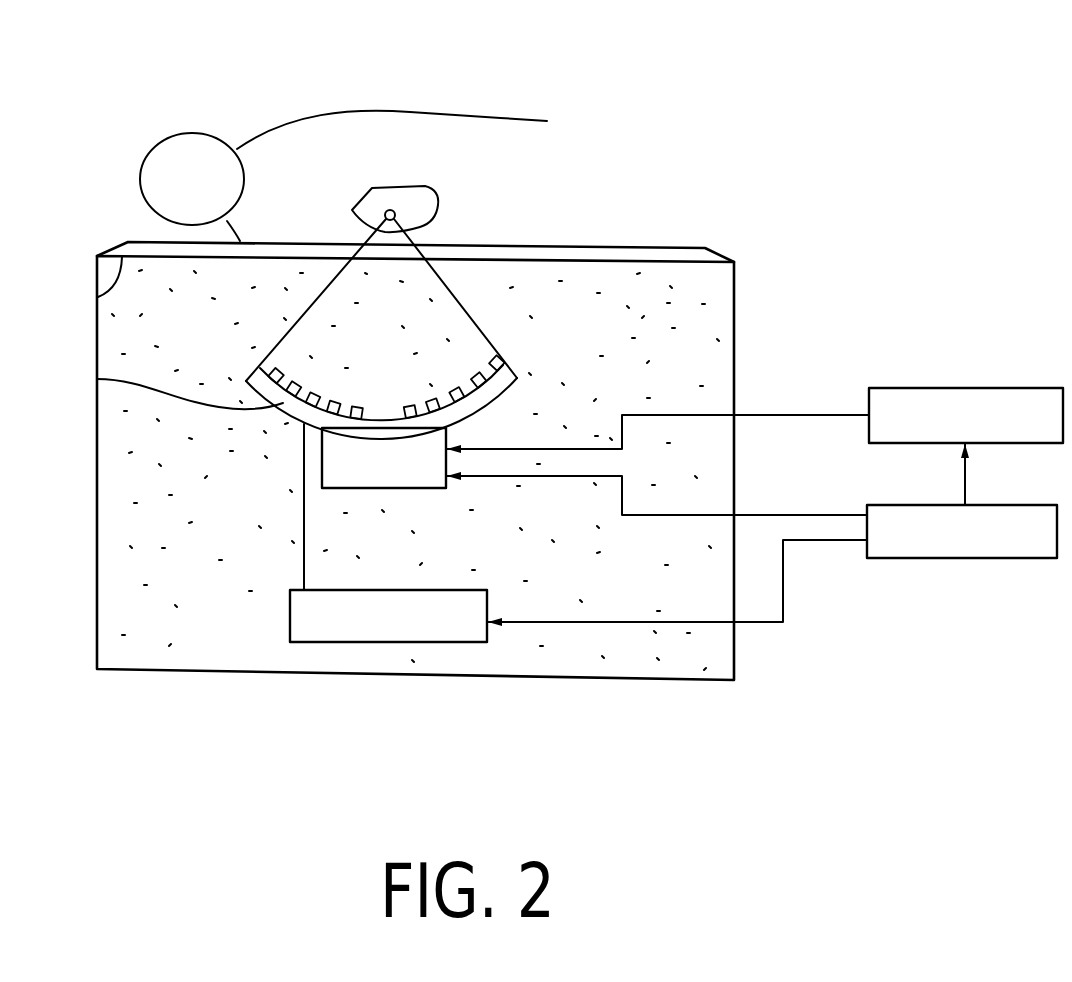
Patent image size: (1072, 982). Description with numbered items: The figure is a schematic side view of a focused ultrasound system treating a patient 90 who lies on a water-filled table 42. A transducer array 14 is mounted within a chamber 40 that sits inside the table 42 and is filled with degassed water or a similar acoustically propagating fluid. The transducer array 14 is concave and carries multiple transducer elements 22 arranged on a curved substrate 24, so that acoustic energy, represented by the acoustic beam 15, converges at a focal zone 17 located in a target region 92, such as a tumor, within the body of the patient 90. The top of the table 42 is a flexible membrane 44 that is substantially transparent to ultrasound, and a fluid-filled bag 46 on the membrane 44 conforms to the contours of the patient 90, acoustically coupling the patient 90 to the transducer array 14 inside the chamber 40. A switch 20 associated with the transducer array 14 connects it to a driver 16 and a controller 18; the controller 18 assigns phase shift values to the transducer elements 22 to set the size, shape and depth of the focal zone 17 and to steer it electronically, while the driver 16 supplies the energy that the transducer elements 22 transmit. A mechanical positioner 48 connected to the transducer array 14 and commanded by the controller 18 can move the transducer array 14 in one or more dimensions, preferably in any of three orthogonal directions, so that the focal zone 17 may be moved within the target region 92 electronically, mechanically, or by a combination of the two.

The transducer array 14 is at (514, 361).
The acoustic beam 15 is at (457, 263).
The driver 16 is at (1007, 386).
The focal zone 17 is at (383, 189).
The controller 18 is at (997, 561).
The switch 20 is at (321, 456).
The transducer elements 22 is at (360, 406).
The substrate 24 is at (97, 379).
The chamber 40 is at (214, 353).
The table 42 is at (97, 473).
The flexible membrane 44 is at (98, 297).
The fluid-filled bag 46 is at (128, 246).
The mechanical positioner 48 is at (289, 616).
The patient 90 is at (452, 112).
The target region 92 is at (428, 187).